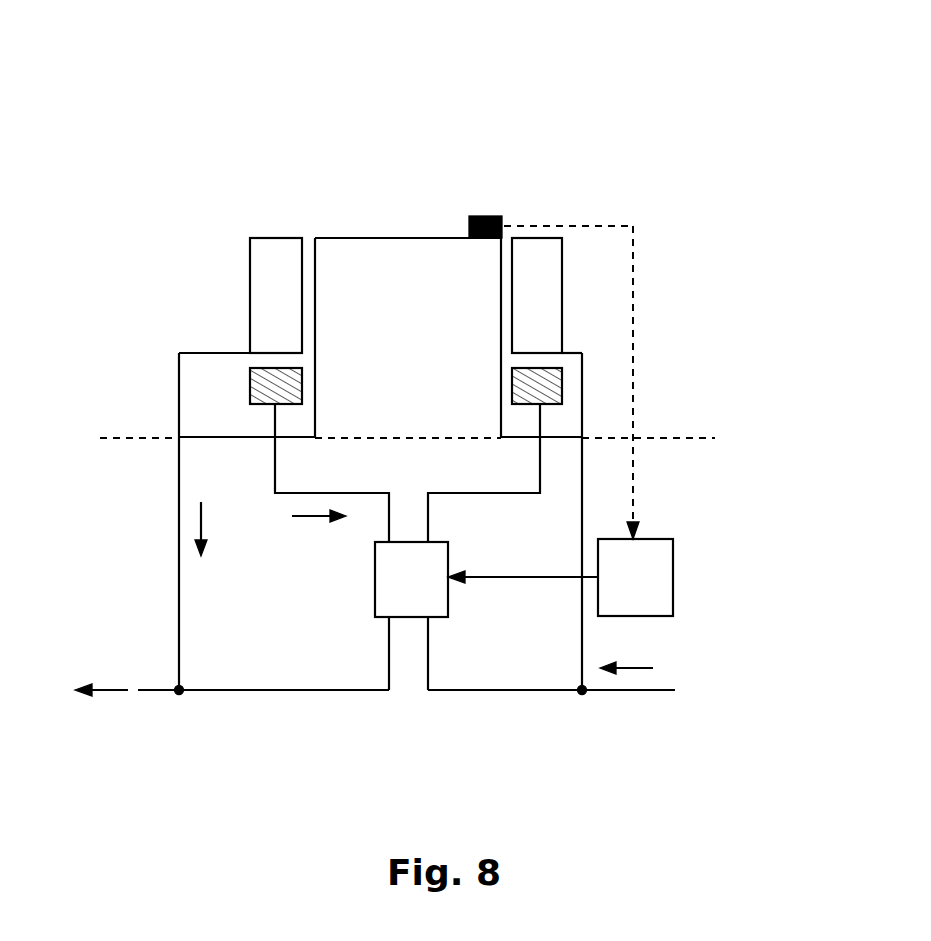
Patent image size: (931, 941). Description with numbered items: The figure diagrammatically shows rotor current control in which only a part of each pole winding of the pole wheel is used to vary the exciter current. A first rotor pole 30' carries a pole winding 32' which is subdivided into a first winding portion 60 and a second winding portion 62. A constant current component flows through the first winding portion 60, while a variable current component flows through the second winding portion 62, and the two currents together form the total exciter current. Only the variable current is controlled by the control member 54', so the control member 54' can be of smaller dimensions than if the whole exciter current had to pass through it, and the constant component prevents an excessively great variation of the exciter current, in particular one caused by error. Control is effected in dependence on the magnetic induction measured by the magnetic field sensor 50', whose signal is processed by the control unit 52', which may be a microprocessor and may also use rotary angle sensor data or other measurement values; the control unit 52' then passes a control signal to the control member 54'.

The first rotor pole 30' is at (417, 373).
The pole winding 32' is at (322, 281).
The magnetic field sensor 50' is at (521, 186).
The control unit 52' is at (603, 421).
The control member 54' is at (337, 643).
The first winding portion 60 is at (277, 256).
The second winding portion 62 is at (262, 386).